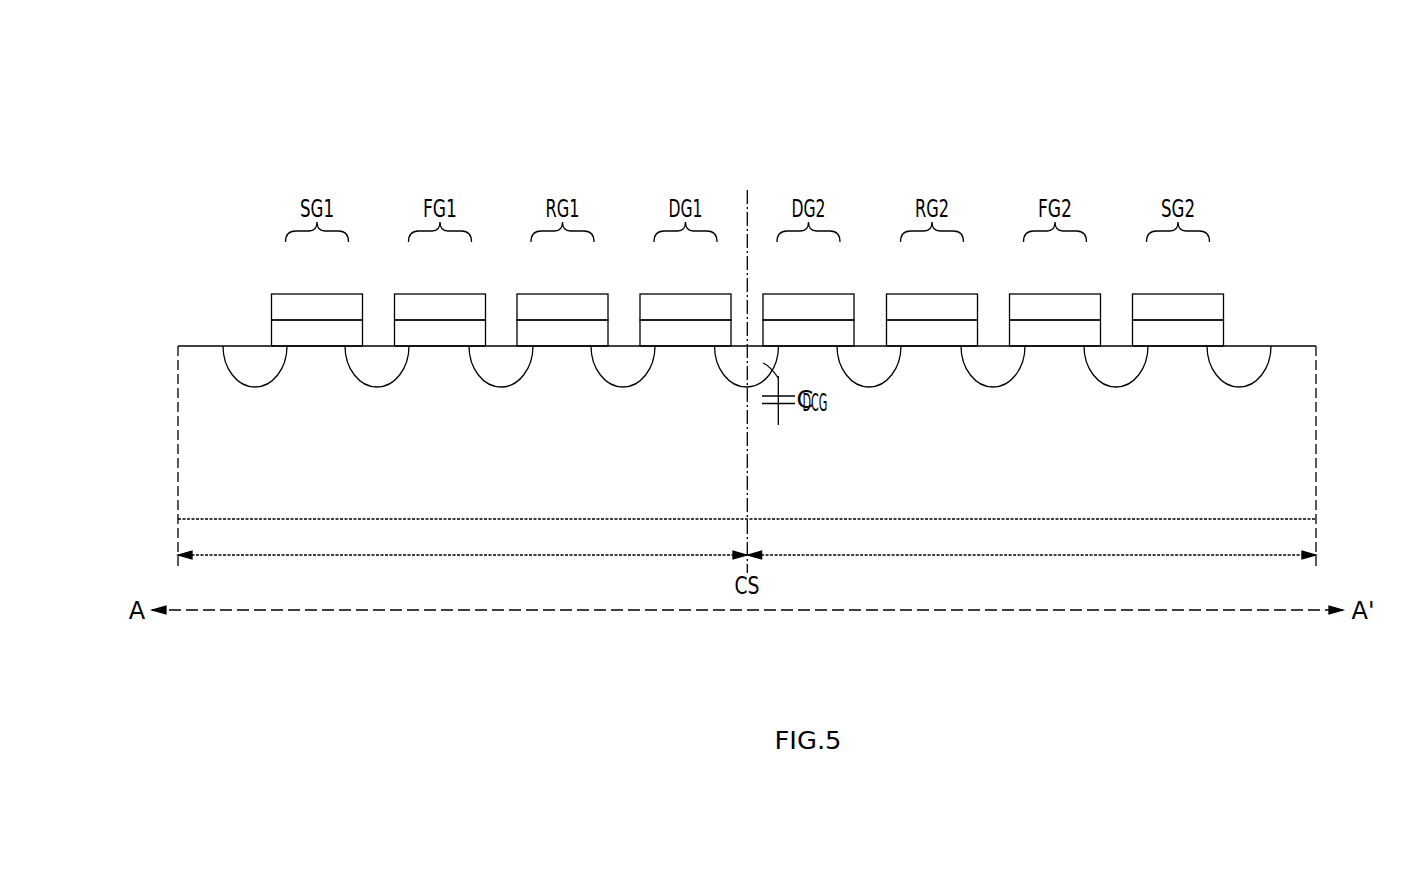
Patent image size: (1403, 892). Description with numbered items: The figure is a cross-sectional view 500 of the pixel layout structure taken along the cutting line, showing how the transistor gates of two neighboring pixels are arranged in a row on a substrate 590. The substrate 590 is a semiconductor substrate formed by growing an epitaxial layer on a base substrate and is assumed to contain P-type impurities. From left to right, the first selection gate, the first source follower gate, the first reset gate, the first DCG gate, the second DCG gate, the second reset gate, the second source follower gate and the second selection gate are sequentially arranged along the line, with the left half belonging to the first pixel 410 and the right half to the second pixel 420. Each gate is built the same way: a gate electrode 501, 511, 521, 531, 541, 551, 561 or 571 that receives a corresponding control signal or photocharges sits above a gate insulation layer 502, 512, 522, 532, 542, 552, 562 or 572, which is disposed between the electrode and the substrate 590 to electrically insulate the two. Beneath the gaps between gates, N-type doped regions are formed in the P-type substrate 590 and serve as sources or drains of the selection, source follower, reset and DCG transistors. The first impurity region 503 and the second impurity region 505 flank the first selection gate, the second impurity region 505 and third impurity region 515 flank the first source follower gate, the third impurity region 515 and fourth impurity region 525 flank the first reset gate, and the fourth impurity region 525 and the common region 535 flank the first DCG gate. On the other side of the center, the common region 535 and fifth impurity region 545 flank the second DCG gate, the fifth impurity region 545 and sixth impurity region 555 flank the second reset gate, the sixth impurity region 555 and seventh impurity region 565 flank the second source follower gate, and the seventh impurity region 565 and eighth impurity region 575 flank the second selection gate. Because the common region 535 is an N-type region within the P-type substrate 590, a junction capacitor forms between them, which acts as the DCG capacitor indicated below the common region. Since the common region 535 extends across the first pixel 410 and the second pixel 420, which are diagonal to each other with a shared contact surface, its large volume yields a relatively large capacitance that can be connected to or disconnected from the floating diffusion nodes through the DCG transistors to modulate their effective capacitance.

The cross-sectional view 500 is at (1097, 143).
The substrate 590 is at (631, 498).
The first pixel 410 is at (462, 569).
The second pixel 420 is at (1032, 569).
The gate electrode 501 is at (286, 308).
The gate insulation layer 502 is at (332, 332).
The first impurity region 503 is at (253, 375).
The second impurity region 505 is at (375, 375).
The gate electrode 511 is at (409, 308).
The gate insulation layer 512 is at (455, 332).
The third impurity region 515 is at (499, 375).
The gate electrode 521 is at (532, 308).
The gate insulation layer 522 is at (578, 332).
The fourth impurity region 525 is at (621, 375).
The gate electrode 531 is at (654, 308).
The gate insulation layer 532 is at (700, 332).
The common region 535 is at (720, 375).
The gate electrode 541 is at (778, 308).
The gate insulation layer 542 is at (824, 332).
The fifth impurity region 545 is at (870, 375).
The gate electrode 551 is at (901, 308).
The gate insulation layer 552 is at (947, 332).
The sixth impurity region 555 is at (991, 375).
The gate electrode 561 is at (1024, 308).
The gate insulation layer 562 is at (1070, 332).
The seventh impurity region 565 is at (1114, 375).
The gate electrode 571 is at (1147, 308).
The gate insulation layer 572 is at (1193, 332).
The eighth impurity region 575 is at (1237, 375).